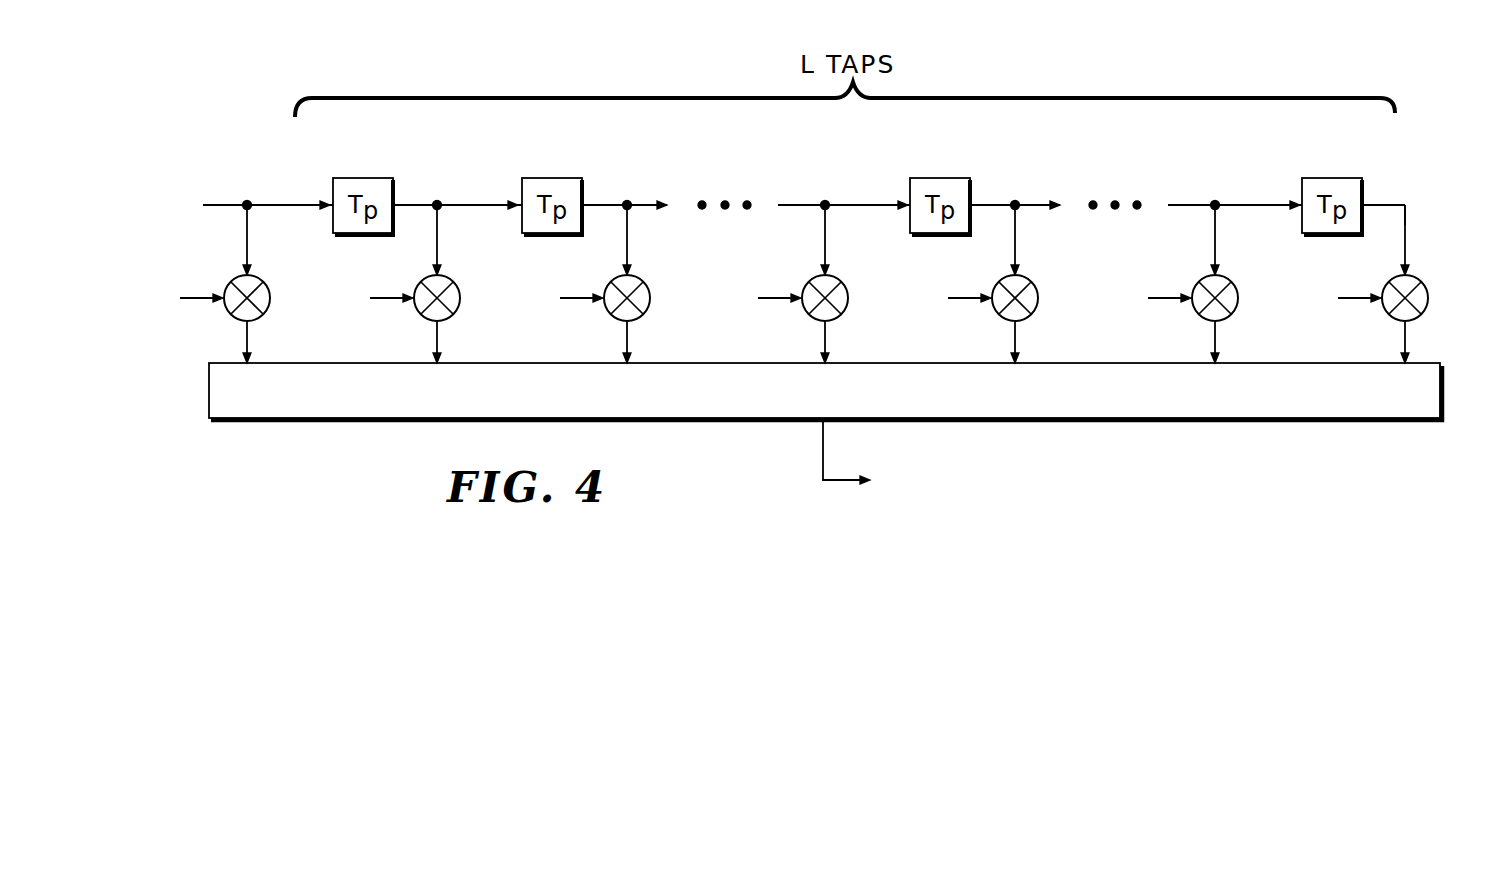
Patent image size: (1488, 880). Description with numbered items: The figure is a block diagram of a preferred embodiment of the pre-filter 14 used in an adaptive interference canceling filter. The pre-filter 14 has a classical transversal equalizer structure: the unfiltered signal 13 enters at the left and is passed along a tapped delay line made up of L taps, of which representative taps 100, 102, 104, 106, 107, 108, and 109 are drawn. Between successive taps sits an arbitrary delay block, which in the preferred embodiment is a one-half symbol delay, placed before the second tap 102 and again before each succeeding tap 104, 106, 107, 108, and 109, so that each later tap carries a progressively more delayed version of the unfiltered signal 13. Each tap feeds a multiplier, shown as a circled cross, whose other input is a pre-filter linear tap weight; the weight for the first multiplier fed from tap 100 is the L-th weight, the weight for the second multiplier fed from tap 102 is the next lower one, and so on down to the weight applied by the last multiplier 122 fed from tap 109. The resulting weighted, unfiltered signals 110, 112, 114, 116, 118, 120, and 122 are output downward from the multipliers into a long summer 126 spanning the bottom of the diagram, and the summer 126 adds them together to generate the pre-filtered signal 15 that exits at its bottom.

The unfiltered signal 13 is at (220, 208).
The pre-filter 14 is at (412, 475).
The pre-filtered signal 15 is at (863, 457).
The tap 100 is at (247, 203).
The tap 102 is at (437, 203).
The tap 104 is at (627, 203).
The tap 106 is at (825, 203).
The tap 107 is at (1015, 203).
The tap 108 is at (1215, 203).
The tap 109 is at (1405, 203).
The weighted, unfiltered signal 110 is at (249, 326).
The weighted, unfiltered signal 112 is at (439, 326).
The weighted, unfiltered signal 114 is at (629, 326).
The weighted, unfiltered signal 116 is at (827, 326).
The weighted, unfiltered signal 118 is at (1017, 326).
The weighted, unfiltered signal 120 is at (1217, 326).
The last multiplier 122 is at (1407, 326).
The summer 126 is at (825, 391).